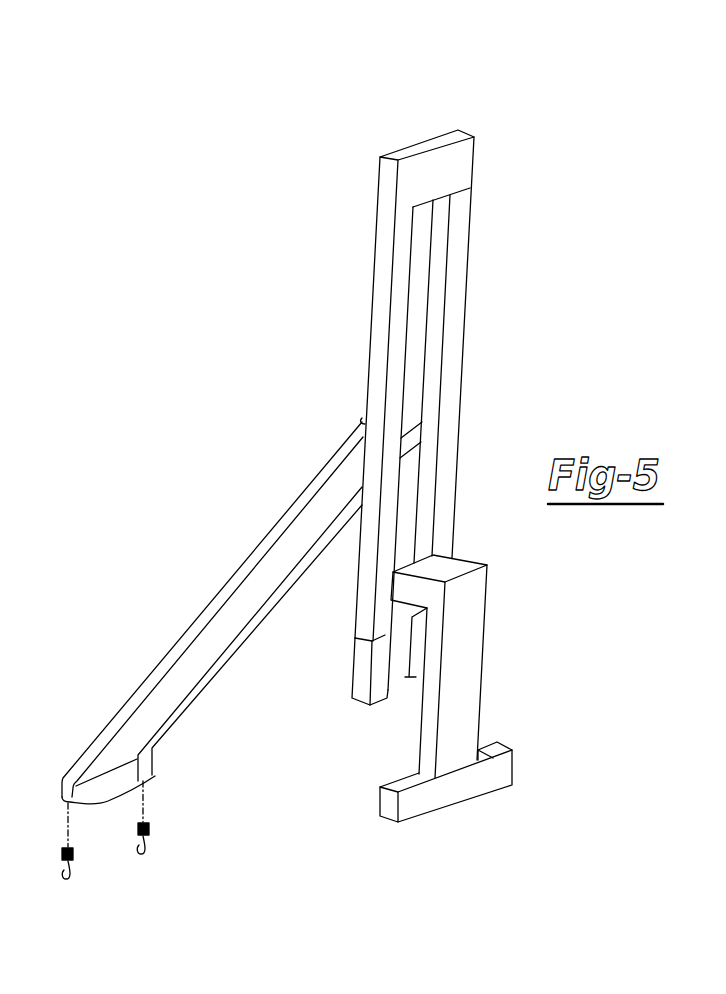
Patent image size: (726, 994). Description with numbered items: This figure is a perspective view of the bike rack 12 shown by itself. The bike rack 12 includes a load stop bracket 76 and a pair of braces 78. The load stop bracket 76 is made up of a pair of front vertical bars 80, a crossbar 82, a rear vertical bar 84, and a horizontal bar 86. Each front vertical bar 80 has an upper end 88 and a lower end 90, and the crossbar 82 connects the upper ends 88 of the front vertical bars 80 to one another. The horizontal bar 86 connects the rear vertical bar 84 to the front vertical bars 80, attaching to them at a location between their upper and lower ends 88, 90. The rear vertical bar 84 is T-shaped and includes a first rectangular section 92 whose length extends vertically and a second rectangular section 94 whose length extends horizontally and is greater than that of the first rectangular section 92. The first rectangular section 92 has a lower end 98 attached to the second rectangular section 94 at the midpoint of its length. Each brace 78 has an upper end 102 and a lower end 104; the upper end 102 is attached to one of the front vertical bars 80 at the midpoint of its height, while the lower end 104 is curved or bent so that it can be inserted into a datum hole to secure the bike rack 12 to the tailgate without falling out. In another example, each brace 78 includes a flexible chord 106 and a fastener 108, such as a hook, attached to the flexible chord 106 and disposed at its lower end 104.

The bike rack 12 is at (323, 490).
The load stop bracket 76 is at (323, 490).
The brace 78 is at (212, 666).
The front vertical bar 80 is at (428, 421).
The crossbar 82 is at (418, 150).
The rear vertical bar 84 is at (481, 662).
The horizontal bar 86 is at (481, 662).
The upper end 88 is at (383, 232).
The lower end 90 is at (416, 678).
The first rectangular section 92 is at (462, 720).
The second rectangular section 94 is at (415, 806).
The lower end 98 is at (470, 590).
The upper end 102 is at (362, 420).
The lower end 104 is at (148, 772).
The flexible chord 106 is at (178, 648).
The fastener 108 is at (73, 855).